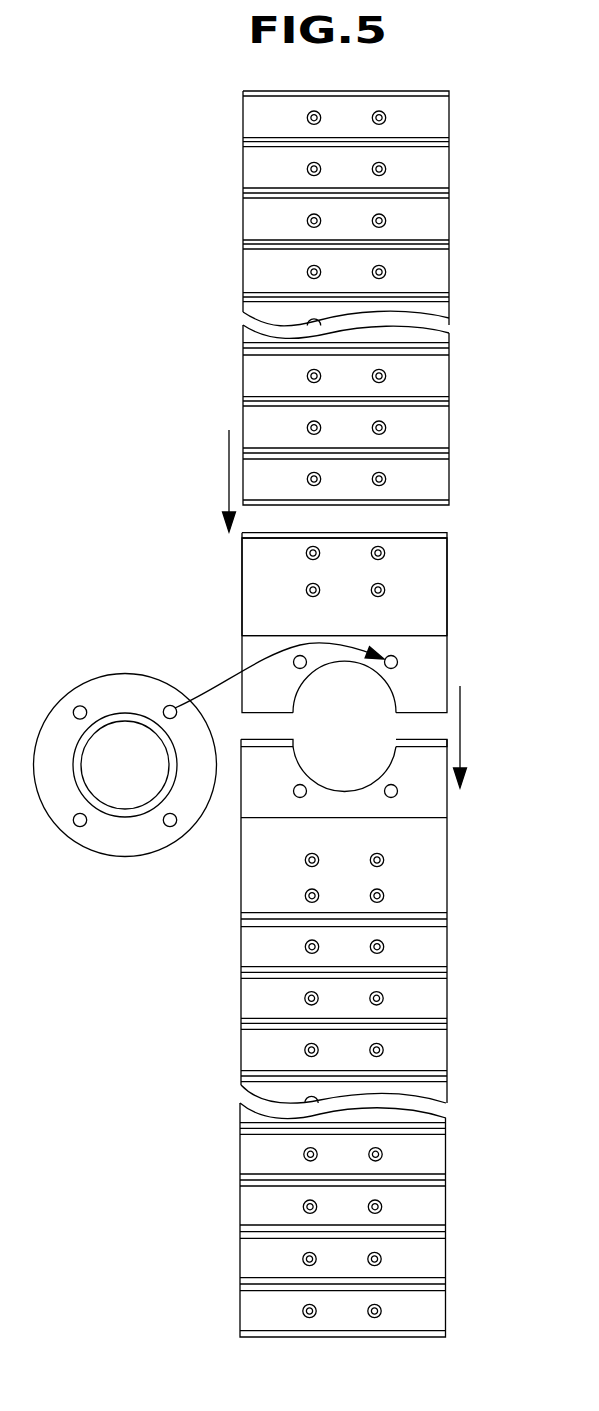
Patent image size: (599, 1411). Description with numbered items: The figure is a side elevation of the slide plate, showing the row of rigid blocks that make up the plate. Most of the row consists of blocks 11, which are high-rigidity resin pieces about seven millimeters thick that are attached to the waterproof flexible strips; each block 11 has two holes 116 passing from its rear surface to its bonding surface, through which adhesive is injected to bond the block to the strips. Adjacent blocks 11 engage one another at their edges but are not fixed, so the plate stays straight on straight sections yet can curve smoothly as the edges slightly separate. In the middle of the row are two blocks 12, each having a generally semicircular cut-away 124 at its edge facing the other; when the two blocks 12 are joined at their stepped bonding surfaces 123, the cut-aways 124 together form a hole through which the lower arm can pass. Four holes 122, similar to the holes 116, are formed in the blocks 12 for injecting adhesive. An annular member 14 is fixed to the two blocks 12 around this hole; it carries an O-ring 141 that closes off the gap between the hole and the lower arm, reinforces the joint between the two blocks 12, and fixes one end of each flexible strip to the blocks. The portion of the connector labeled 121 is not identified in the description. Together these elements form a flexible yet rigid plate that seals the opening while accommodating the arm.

The block 11 is at (273, 714).
The hole 116 is at (308, 218).
The middle block 12 is at (306, 612).
The connecting plate 121 is at (256, 537).
The hole 122 is at (385, 553).
The stepped bonding surface 123 is at (243, 742).
The semicircular cut-away 124 is at (393, 694).
The annular member 14 is at (209, 775).
The O-ring 141 is at (128, 812).